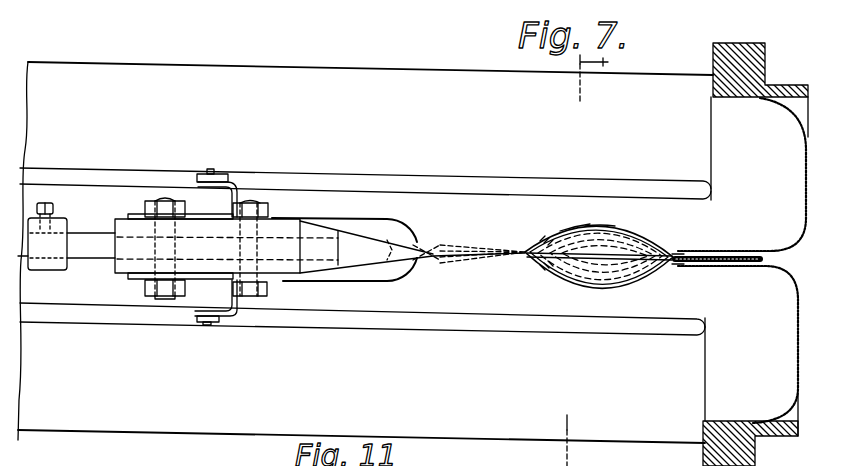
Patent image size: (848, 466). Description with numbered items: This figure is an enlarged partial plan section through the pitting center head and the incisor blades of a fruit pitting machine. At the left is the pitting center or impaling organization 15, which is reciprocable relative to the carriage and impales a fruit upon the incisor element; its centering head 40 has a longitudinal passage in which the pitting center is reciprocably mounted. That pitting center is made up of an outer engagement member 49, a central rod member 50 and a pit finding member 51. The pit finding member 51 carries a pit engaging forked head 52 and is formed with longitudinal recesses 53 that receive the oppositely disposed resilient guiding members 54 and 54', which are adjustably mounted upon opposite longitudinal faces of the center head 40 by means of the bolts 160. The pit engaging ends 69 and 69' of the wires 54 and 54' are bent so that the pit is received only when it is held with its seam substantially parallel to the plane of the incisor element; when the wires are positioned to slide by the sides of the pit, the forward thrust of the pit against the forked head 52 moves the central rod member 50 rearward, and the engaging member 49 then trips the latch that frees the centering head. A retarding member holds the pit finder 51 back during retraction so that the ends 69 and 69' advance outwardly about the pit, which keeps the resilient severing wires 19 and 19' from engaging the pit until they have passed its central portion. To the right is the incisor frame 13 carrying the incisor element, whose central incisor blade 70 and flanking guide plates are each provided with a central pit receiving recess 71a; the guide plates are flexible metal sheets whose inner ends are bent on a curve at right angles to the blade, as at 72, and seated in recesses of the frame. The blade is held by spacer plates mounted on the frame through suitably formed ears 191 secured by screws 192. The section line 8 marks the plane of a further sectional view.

The section line 8— 8 is at (596, 259).
The incisor frame 13 is at (703, 53).
The pitting center or impaling organization 15 is at (122, 295).
The resilient severing wire 19 is at (599, 296).
The resilient severing wire 19' is at (583, 190).
The centering head 40 is at (193, 244).
The outer engagement member 49 is at (58, 223).
The central rod member 50 is at (92, 243).
The pit finding member 51 is at (364, 228).
The pit engaging forked head 52 is at (549, 239).
The longitudinal recess 53 is at (469, 246).
The resilient guiding member 54 is at (350, 307).
The resilient guiding member 54' is at (344, 192).
The pit engaging end 69 is at (599, 298).
The pit engaging end 69' is at (613, 189).
The central incisor blade 70 is at (728, 258).
The central pit receiving recess 71a is at (674, 252).
The bent portion of guide plate 72 is at (802, 178).
The bolts 160 is at (248, 210).
The ears 191 is at (235, 183).
The screws 192 is at (203, 322).